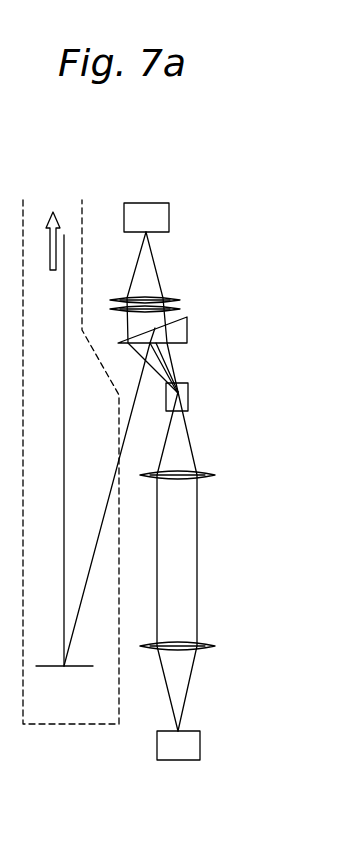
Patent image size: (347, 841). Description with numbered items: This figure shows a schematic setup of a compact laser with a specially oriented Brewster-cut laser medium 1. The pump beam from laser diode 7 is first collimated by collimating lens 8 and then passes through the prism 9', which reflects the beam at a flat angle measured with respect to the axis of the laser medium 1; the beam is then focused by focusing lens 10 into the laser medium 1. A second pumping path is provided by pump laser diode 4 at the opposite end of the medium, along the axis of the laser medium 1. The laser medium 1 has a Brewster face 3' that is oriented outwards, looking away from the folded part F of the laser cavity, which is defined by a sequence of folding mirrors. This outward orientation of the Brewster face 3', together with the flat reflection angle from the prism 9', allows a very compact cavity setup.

The laser diode 7 is at (150, 218).
The collimating lens 8 is at (168, 300).
The focusing lens 10 is at (180, 307).
The prism 9' is at (199, 342).
The Brewster face 3' is at (246, 388).
The laser gain medium 1 is at (182, 388).
The pump laser diode 4 is at (175, 745).
The folded part F is at (42, 726).